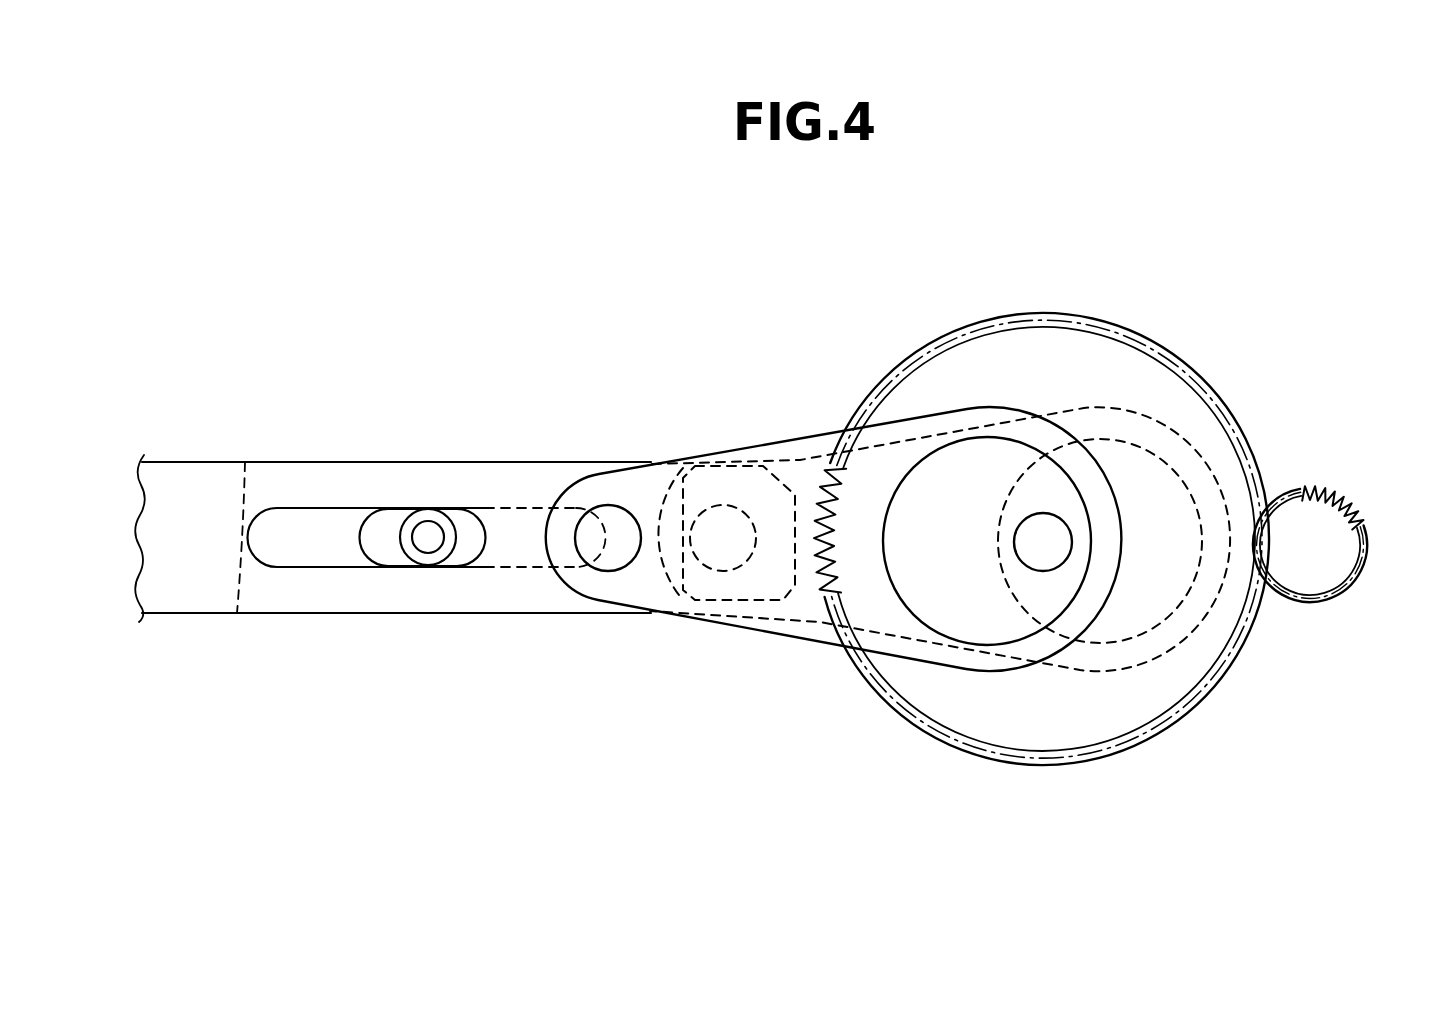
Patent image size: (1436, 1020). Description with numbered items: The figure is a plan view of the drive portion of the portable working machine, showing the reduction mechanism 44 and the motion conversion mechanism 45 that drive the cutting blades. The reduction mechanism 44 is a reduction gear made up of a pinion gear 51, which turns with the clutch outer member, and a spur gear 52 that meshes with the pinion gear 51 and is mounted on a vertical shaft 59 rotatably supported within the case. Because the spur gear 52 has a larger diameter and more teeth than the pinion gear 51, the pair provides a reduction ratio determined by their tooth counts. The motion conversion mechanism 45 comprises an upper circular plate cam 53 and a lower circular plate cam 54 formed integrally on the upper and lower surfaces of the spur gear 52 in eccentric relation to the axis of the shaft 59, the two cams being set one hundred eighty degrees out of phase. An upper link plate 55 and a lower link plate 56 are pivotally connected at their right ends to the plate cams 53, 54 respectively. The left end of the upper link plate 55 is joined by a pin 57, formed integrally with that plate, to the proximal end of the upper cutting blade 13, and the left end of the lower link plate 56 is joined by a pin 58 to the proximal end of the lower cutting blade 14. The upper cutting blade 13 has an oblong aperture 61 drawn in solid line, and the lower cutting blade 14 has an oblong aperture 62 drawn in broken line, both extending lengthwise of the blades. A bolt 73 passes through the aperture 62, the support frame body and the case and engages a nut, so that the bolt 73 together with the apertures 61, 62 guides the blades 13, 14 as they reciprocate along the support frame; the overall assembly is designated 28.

The seat reclining device 28 is at (265, 185).
The upper cutting blade 13 is at (500, 616).
The lower cutting blade 14 is at (730, 622).
The oblong aperture 61 is at (306, 508).
The oblong aperture 62 is at (504, 508).
The bolt 73 is at (428, 522).
The pin 57 is at (609, 520).
The pin 58 is at (723, 506).
The lower link plate 56 is at (1063, 408).
The upper link plate 55 is at (918, 412).
The motion conversion mechanism 45 is at (803, 433).
The upper circular plate cam 53 is at (937, 637).
The lower circular plate cam 54 is at (1103, 642).
The vertical shaft 59 is at (1040, 555).
The reduction mechanism 44 is at (1435, 228).
The spur gear 52 is at (1190, 355).
The pinion gear 51 is at (1292, 490).